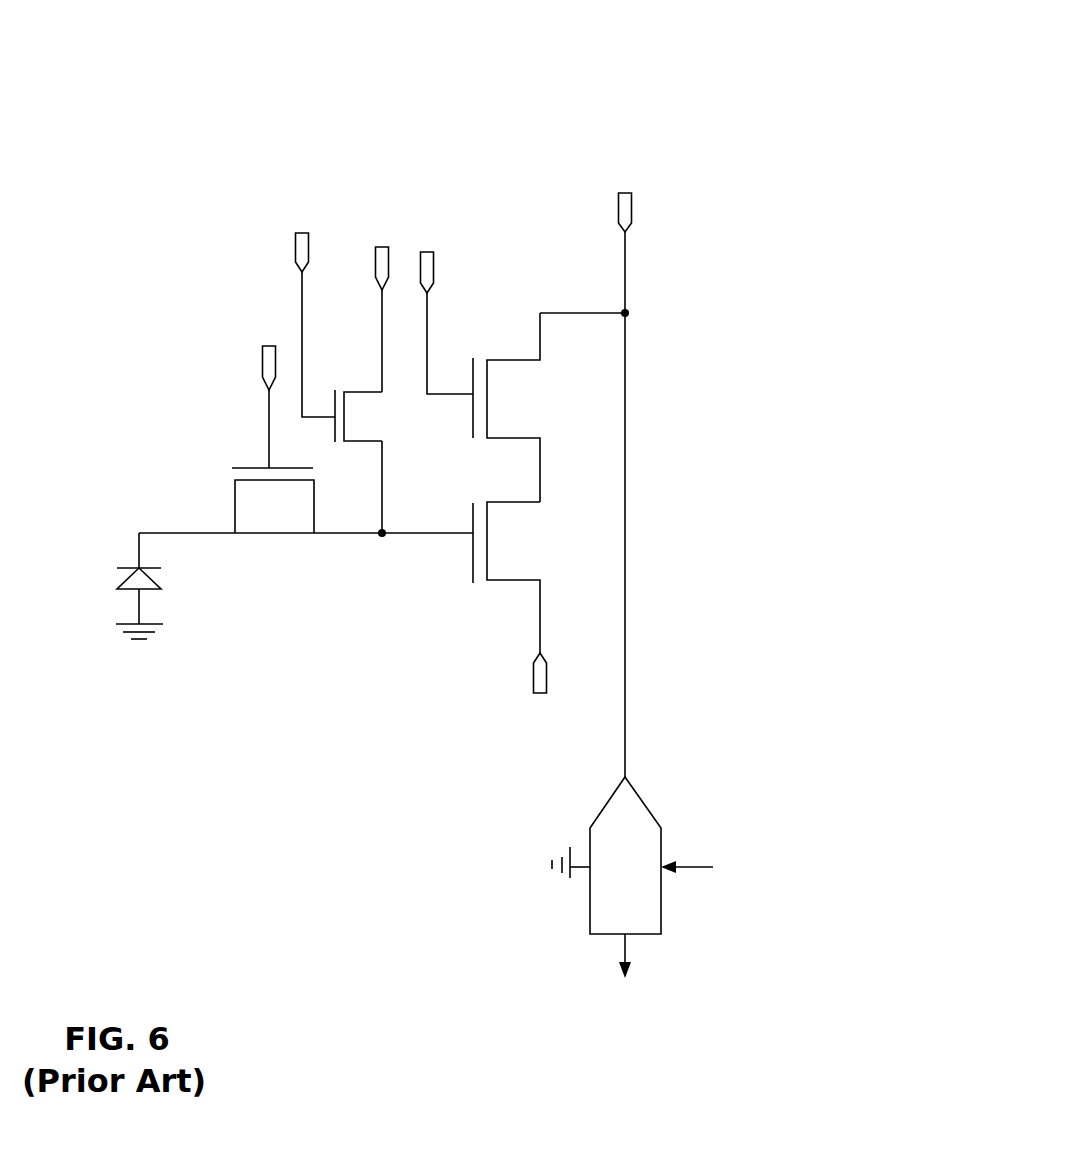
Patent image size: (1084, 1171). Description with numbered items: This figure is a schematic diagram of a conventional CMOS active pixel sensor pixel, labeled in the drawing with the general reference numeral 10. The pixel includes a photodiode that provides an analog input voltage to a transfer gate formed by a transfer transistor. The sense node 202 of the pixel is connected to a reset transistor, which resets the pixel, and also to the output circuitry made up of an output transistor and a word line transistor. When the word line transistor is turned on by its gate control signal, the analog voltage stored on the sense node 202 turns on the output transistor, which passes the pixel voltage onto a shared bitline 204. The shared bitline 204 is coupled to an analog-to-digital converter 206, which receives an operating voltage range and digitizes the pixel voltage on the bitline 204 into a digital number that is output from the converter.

The pixel circuit 10 is at (457, 508).
The sense node 202 is at (382, 537).
The shared bitline 204 is at (629, 313).
The analog-to-digital converter (ADC) 206 is at (661, 926).